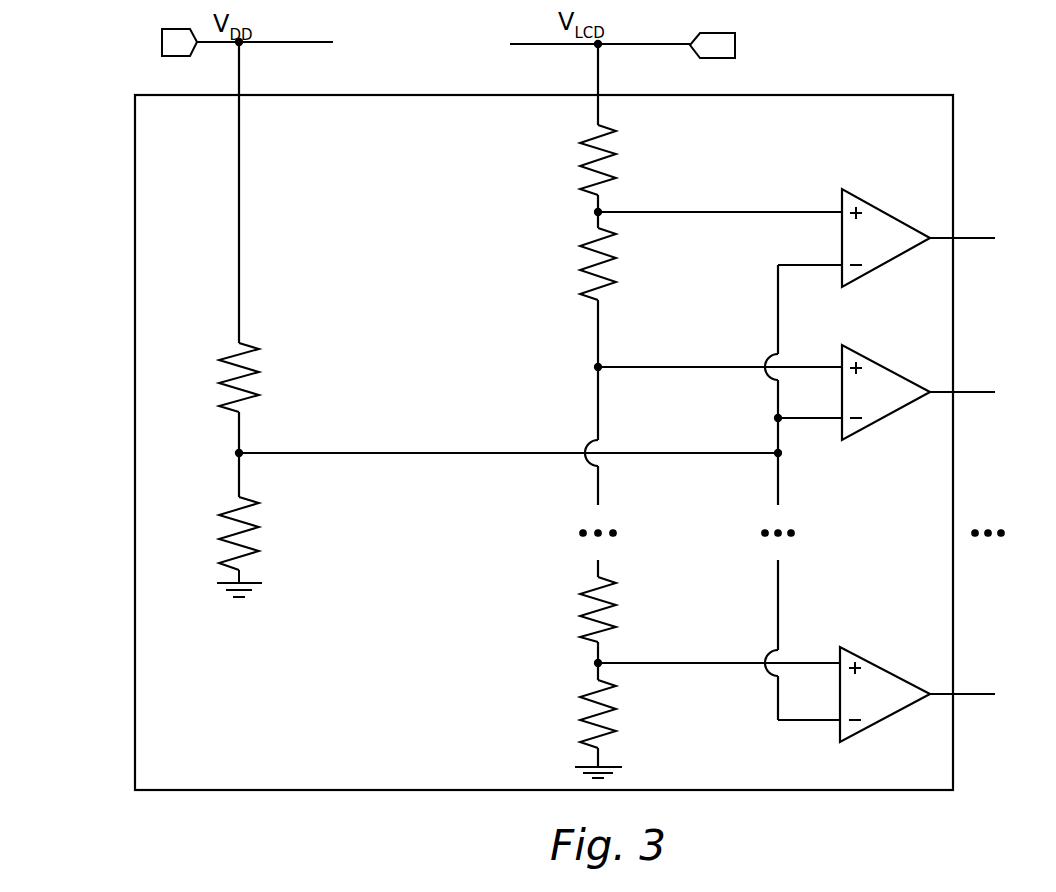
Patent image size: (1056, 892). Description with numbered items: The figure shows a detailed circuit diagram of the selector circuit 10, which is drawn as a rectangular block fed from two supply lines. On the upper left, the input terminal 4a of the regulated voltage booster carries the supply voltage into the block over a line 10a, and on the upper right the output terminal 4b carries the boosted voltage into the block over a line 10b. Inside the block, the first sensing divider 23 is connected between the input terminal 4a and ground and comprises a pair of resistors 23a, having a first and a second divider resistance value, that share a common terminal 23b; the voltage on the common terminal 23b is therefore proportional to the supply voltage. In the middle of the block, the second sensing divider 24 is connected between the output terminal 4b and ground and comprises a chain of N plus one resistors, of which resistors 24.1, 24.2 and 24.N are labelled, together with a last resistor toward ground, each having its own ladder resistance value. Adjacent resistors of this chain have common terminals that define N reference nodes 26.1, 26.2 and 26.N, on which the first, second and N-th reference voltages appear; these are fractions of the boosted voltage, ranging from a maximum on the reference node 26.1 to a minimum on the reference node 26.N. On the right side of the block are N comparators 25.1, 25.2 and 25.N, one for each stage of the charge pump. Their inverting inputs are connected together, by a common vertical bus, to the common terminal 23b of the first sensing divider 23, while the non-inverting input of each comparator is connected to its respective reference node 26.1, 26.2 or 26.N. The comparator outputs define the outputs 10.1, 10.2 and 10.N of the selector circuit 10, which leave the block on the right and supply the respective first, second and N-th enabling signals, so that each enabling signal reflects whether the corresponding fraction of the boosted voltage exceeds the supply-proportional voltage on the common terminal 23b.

The input terminal 4a is at (162, 42).
The output terminal 4b is at (735, 45).
The selector circuit 10 is at (400, 770).
The VDD input line 10a is at (218, 166).
The VLCD input line 10b is at (572, 118).
The output 10.1 is at (975, 238).
The output 10.2 is at (975, 392).
The output 10.N is at (968, 697).
The first sensing divider 23 is at (464, 466).
The resistors 23a is at (225, 372).
The common terminal 23b is at (239, 453).
The second sensing divider 24 is at (566, 451).
The resistor 24.1 is at (610, 152).
The resistor 24.2 is at (612, 265).
The resistor 24.N is at (580, 623).
The comparator 25.1 is at (899, 228).
The comparator 25.2 is at (885, 376).
The comparator 25.N is at (880, 672).
The reference node 26.1 is at (598, 212).
The reference node 26.2 is at (598, 367).
The reference node 26.N is at (598, 663).